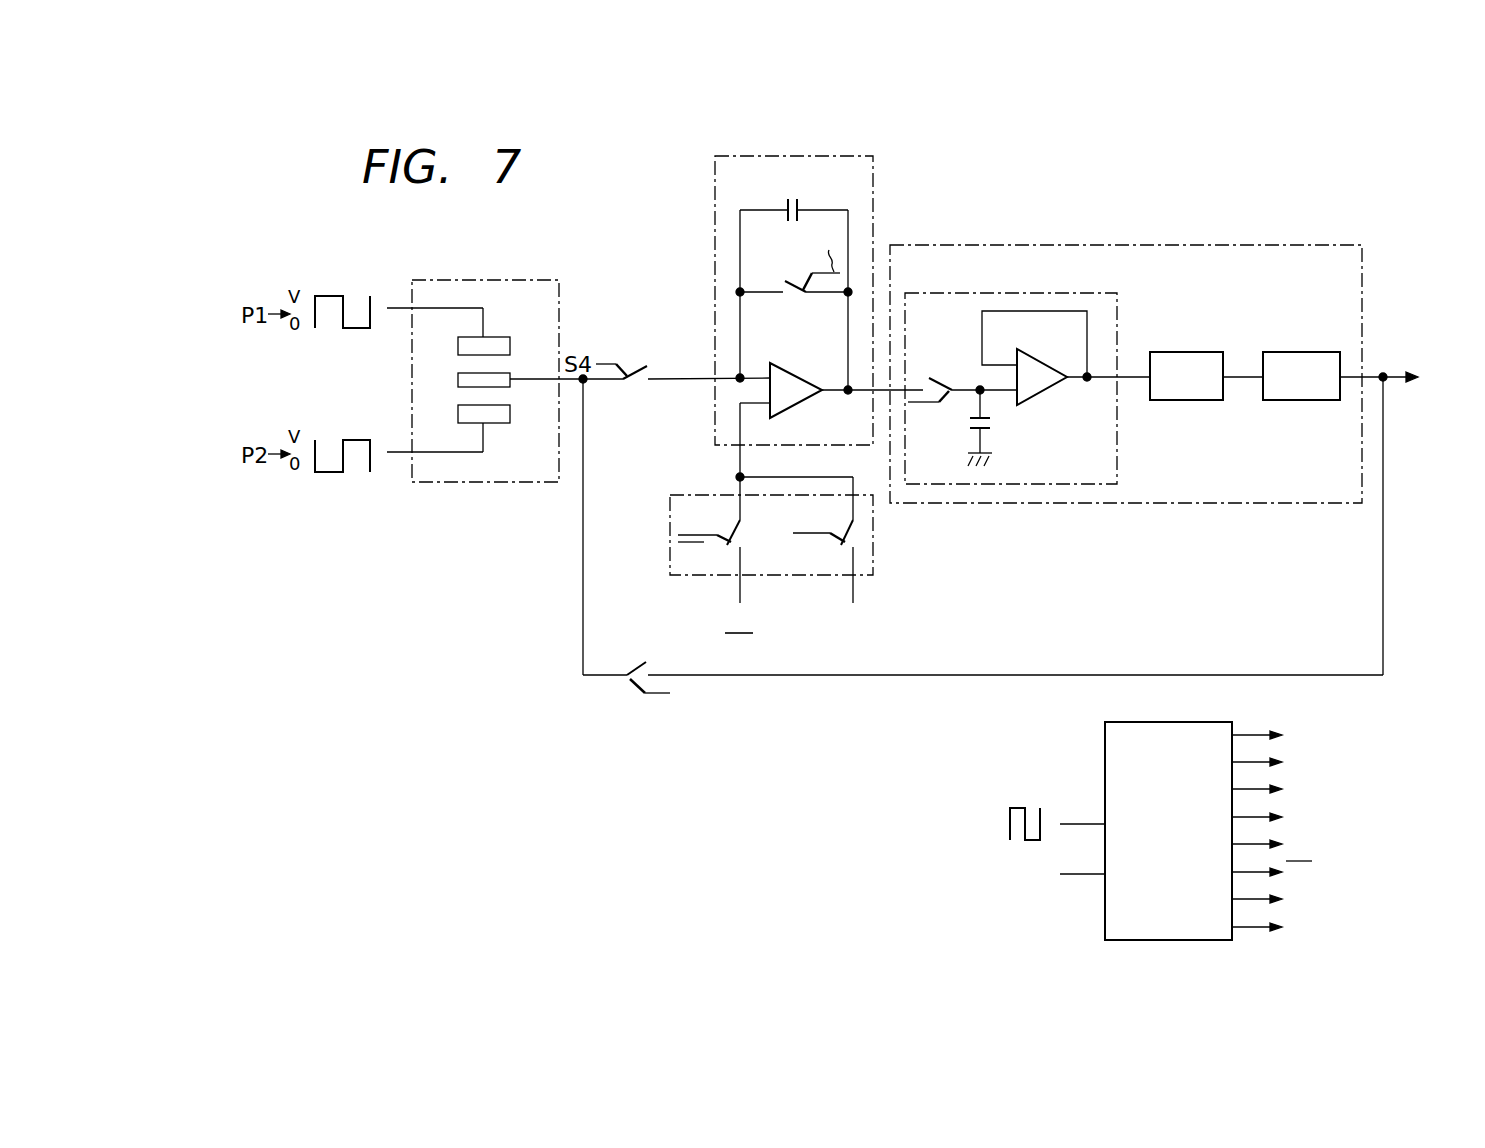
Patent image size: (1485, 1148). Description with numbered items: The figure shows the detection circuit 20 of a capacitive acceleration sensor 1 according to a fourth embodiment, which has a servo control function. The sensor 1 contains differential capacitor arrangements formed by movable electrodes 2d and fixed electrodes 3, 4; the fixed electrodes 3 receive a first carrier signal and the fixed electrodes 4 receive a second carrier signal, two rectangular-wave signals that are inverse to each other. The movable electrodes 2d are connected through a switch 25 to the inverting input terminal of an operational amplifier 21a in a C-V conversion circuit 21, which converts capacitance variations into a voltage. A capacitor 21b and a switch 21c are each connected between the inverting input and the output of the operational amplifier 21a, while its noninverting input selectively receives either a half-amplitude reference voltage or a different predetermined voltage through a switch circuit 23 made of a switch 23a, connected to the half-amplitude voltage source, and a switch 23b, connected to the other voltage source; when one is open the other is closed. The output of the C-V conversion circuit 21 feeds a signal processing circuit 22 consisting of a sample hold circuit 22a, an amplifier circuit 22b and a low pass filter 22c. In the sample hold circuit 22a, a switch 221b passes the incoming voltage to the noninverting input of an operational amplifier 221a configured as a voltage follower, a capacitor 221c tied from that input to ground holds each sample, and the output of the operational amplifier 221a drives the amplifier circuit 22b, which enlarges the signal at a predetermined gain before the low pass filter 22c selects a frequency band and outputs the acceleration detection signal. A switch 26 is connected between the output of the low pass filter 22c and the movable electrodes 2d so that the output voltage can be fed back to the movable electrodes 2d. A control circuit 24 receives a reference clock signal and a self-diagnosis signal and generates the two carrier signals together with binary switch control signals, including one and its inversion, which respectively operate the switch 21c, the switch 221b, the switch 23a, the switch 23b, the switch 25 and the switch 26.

The capacitive acceleration sensor 1 is at (485, 362).
The fixed electrodes 3 is at (512, 339).
The movable electrodes 2d is at (510, 373).
The fixed electrodes 4 is at (512, 415).
The detection circuit 20 is at (1004, 179).
The C-V conversion circuit 21 is at (837, 160).
The operational amplifier 21a is at (800, 375).
The capacitor 21b is at (800, 205).
The switch 21c is at (796, 284).
The signal processing circuit 22 is at (1282, 255).
The sample hold circuit 22a is at (1075, 294).
The operational amplifier 221a is at (1047, 361).
The switch 221b is at (941, 378).
The capacitor 221c is at (993, 425).
The amplifier circuit 22b is at (1192, 351).
The low pass filter 22c is at (1308, 351).
The switch circuit 23 is at (875, 530).
The switch 23a is at (731, 538).
The switch 23b is at (845, 536).
The control circuit 24 is at (1185, 728).
The switch 25 is at (638, 367).
The switch 26 is at (628, 667).